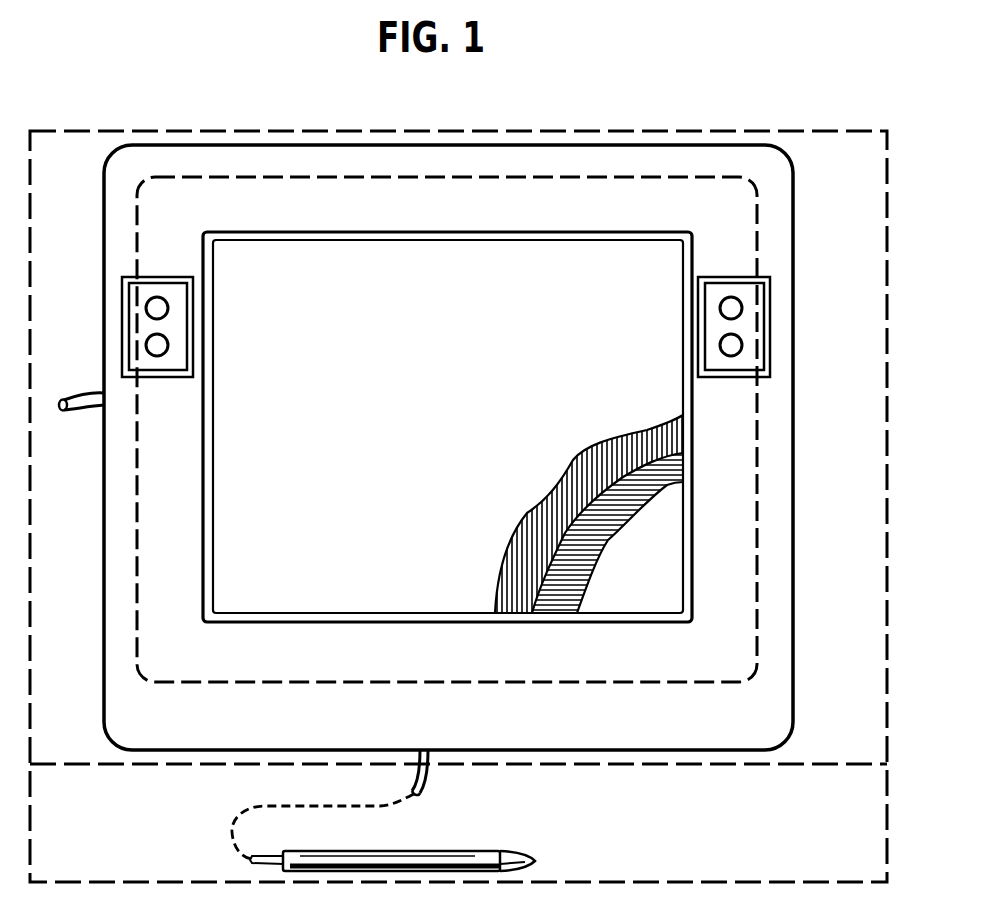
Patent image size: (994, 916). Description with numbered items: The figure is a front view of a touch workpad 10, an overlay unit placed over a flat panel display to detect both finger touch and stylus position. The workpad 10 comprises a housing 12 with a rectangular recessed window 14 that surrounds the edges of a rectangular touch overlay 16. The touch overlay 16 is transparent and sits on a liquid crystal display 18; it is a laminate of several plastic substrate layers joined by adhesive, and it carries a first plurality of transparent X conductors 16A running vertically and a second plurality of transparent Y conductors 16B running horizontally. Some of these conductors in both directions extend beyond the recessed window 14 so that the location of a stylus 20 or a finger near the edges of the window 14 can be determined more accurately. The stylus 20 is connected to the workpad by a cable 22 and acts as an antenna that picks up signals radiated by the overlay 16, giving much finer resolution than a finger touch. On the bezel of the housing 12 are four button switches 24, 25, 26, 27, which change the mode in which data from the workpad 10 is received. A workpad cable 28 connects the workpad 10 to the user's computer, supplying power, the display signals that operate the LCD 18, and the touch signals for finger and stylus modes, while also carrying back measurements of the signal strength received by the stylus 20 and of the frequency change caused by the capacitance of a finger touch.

The workpad 10 is at (861, 874).
The housing 12 is at (97, 554).
The recessed window 14 is at (213, 465).
The touch overlay 16 is at (458, 437).
The transparent X conductors 16A is at (552, 496).
The transparent Y conductors 16B is at (557, 600).
The liquid crystal display 18 is at (656, 584).
The stylus 20 is at (424, 851).
The cable 22 is at (428, 780).
The button switch 24 is at (731, 308).
The button switch 25 is at (731, 345).
The button switch 26 is at (157, 308).
The button switch 27 is at (157, 345).
The workpad cable 28 is at (78, 408).